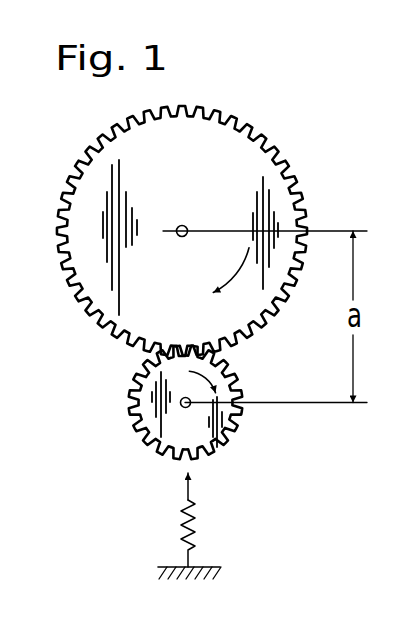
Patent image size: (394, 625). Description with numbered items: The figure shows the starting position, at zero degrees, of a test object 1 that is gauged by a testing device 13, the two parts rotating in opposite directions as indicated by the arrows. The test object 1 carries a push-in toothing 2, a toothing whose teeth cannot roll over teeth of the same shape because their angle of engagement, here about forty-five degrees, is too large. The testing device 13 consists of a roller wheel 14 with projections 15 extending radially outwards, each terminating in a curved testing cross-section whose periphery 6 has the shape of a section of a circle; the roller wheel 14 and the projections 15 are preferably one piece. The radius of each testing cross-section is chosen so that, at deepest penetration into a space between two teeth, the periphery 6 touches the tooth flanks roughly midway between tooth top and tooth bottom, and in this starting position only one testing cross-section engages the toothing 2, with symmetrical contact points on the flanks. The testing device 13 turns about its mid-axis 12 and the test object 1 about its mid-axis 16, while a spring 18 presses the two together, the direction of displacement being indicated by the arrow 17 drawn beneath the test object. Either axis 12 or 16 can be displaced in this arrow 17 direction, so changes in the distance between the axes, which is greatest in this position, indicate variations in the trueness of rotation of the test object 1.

The test object 1 is at (205, 430).
The push-in toothing 2 is at (243, 418).
The periphery of the testing cross-section 6 is at (203, 148).
The mid-axis of the testing device 12 is at (187, 227).
The testing device 13 is at (187, 199).
The roller wheel 14 is at (268, 193).
The projections 15 is at (156, 230).
The mid-axis of the test object 16 is at (184, 405).
The force arrow 17 is at (185, 487).
The spring 18 is at (190, 525).